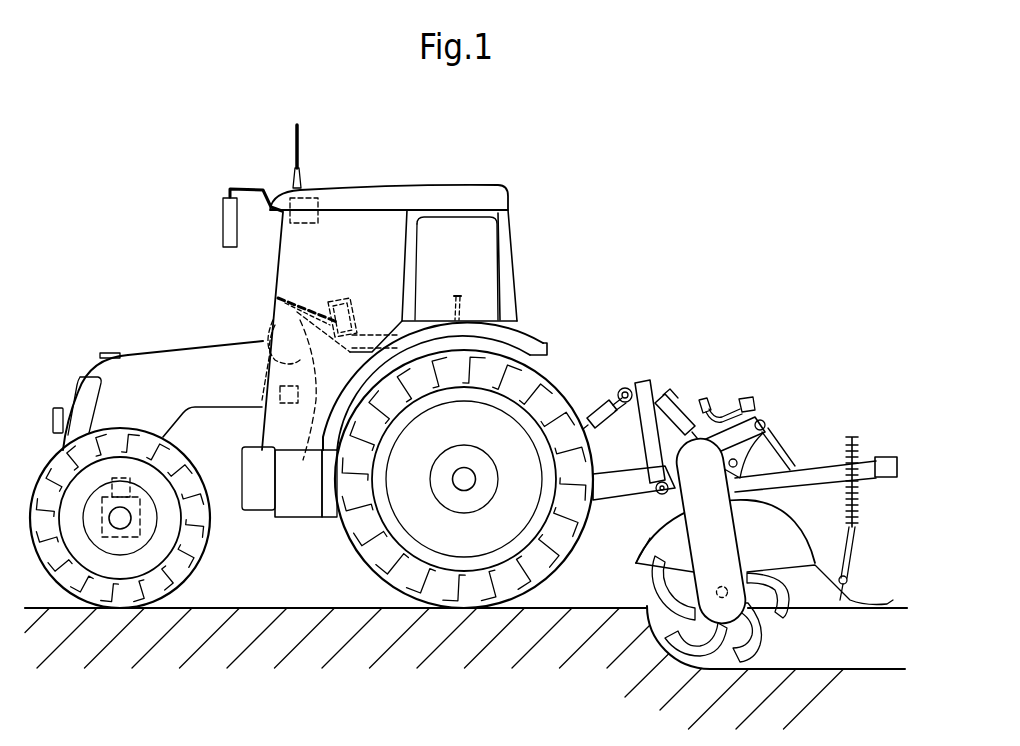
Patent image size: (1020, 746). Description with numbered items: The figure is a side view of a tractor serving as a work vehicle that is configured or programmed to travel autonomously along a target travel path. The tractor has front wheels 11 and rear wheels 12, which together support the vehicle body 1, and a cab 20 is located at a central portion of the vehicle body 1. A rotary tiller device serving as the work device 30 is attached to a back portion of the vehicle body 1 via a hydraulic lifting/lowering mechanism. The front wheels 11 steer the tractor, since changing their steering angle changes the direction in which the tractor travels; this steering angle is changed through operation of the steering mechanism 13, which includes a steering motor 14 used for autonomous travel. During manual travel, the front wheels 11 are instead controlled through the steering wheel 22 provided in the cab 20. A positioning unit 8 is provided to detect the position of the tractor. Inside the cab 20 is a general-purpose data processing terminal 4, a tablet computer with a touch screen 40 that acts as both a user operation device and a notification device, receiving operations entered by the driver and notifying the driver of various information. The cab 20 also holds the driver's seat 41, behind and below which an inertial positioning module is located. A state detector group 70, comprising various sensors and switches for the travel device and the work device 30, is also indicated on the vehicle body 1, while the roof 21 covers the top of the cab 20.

The vehicle body 1 is at (296, 532).
The data processing terminal 4 is at (345, 298).
The positioning unit 8 is at (318, 198).
The front wheels 11 is at (118, 606).
The rear wheels 12 is at (483, 607).
The steering mechanism 13 is at (138, 537).
The steering motor 14 is at (103, 488).
The cab 20 is at (340, 267).
The roof 21 is at (488, 190).
The steering wheel 22 is at (288, 300).
The work device 30 is at (788, 405).
The touch screen 40 is at (358, 320).
The driver's seat 41 is at (460, 294).
The state detector group 70 is at (298, 483).